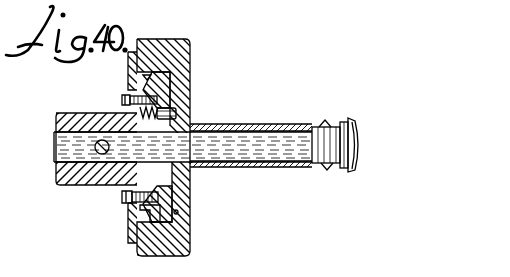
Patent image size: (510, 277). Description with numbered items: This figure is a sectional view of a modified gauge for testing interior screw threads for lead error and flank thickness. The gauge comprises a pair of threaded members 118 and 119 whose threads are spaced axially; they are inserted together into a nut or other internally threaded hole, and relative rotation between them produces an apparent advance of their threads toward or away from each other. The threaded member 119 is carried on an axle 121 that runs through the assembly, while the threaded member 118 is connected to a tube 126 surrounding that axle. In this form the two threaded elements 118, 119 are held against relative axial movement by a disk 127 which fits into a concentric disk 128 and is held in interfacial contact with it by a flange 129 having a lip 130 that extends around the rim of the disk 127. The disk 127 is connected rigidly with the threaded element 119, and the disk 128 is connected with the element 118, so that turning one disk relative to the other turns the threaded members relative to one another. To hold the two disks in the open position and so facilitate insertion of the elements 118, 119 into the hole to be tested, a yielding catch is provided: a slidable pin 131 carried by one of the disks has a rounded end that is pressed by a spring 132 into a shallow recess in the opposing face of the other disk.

The threaded member 118 is at (322, 121).
The threaded member 119 is at (350, 121).
The axle 121 is at (276, 156).
The sleeve 126 is at (272, 126).
The disk 127 is at (163, 77).
The concentric disk 128 is at (178, 217).
The flange 129 is at (161, 39).
The lip 130 is at (142, 222).
The slidable pin 131 is at (172, 115).
The spring 132 is at (137, 110).